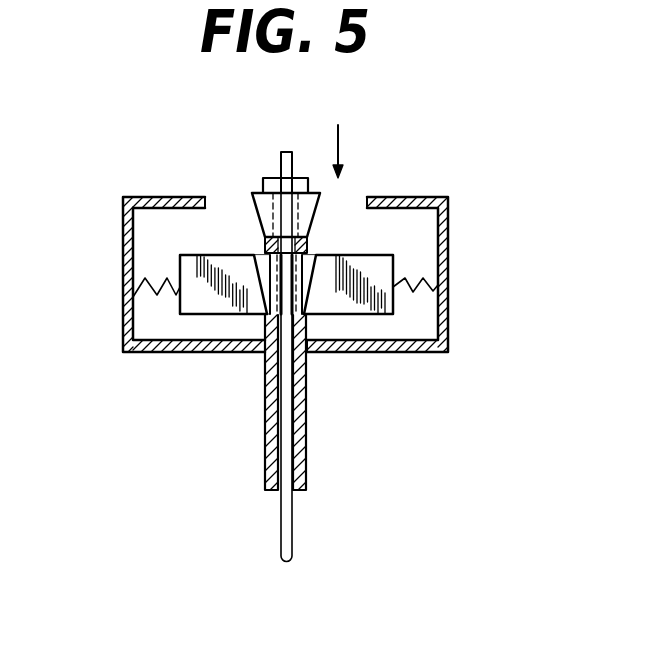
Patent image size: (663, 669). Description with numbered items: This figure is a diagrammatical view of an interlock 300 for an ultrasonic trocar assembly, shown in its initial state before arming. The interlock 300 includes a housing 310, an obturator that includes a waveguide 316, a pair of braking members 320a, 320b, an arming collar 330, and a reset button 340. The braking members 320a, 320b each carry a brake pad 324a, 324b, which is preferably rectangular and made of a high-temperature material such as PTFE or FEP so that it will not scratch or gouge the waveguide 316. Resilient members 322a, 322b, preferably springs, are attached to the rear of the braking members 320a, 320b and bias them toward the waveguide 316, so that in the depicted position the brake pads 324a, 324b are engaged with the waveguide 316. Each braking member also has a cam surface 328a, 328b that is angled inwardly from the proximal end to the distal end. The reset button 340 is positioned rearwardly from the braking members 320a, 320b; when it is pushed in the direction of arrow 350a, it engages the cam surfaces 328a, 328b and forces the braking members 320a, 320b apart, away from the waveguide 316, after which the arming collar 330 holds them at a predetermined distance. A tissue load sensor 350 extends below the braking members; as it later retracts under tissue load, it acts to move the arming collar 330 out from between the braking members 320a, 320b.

The interlock 300 is at (158, 181).
The housing 310 is at (448, 182).
The waveguide 316 is at (288, 423).
The braking member 320a is at (237, 318).
The braking member 320b is at (385, 323).
The resilient member 322a is at (155, 292).
The resilient member 322b is at (422, 282).
The brake pad 324a is at (197, 307).
The brake pad 324b is at (345, 262).
The cam surface 328a is at (259, 255).
The cam surface 328b is at (300, 288).
The arming collar 330 is at (270, 183).
The reset button 340 is at (250, 198).
The tissue load sensor 350 is at (307, 457).
The arrow 350a is at (340, 148).